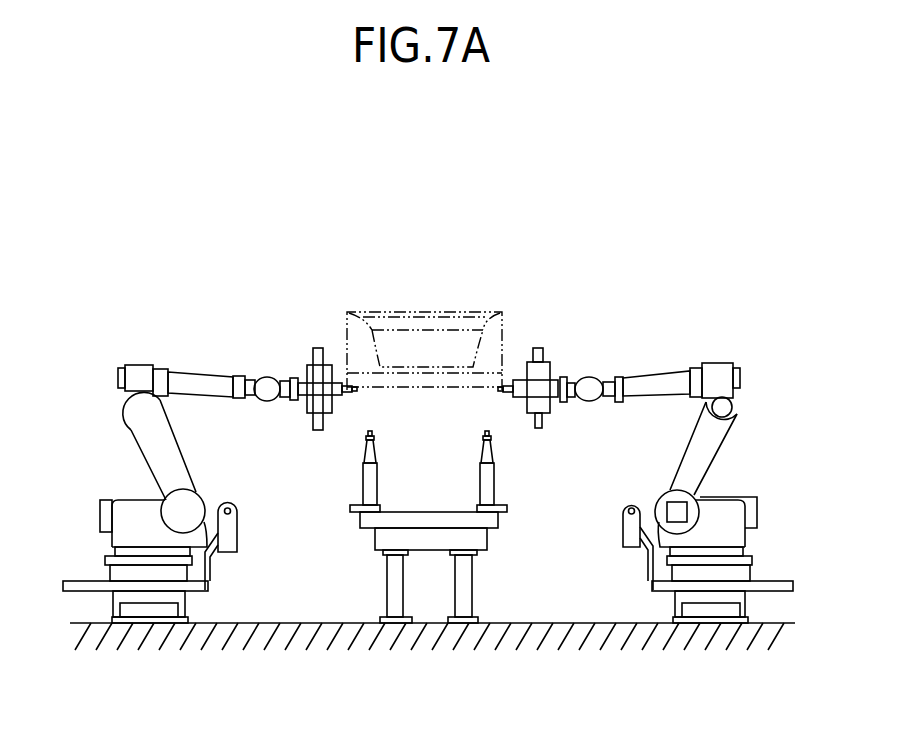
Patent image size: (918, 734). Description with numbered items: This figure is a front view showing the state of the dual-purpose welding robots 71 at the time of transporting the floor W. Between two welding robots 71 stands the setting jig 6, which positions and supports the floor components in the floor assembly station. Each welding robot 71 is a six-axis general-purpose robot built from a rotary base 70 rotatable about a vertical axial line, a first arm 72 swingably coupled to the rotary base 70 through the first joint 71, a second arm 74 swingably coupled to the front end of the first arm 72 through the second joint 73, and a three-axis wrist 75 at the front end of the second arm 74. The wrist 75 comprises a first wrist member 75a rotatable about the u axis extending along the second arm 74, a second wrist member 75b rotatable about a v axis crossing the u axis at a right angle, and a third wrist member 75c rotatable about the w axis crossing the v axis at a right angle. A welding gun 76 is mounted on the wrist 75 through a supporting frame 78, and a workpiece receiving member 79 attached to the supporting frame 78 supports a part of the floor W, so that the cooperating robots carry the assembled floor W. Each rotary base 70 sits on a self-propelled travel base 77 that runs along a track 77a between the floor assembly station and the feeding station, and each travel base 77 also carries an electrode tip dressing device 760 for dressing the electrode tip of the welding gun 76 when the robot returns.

The setting jig 6 is at (362, 520).
The floor W is at (433, 318).
The w axis w is at (565, 375).
The u axis u is at (635, 383).
The rotary base 70 is at (105, 560).
The first joint 71 is at (132, 350).
The first arm 72 is at (152, 448).
The second joint 73 is at (723, 408).
The second arm 74 is at (193, 378).
The three-axis wrist 75 is at (442, 386).
The first wrist member 75a is at (607, 393).
The second wrist member 75b is at (588, 390).
The third wrist member 75c is at (568, 400).
The welding gun 76 is at (416, 383).
The travel base 77 is at (200, 587).
The track 77a is at (143, 613).
The supporting frame 78 is at (300, 402).
The workpiece receiving member 79 is at (347, 395).
The electrode tip dressing device 760 is at (230, 527).